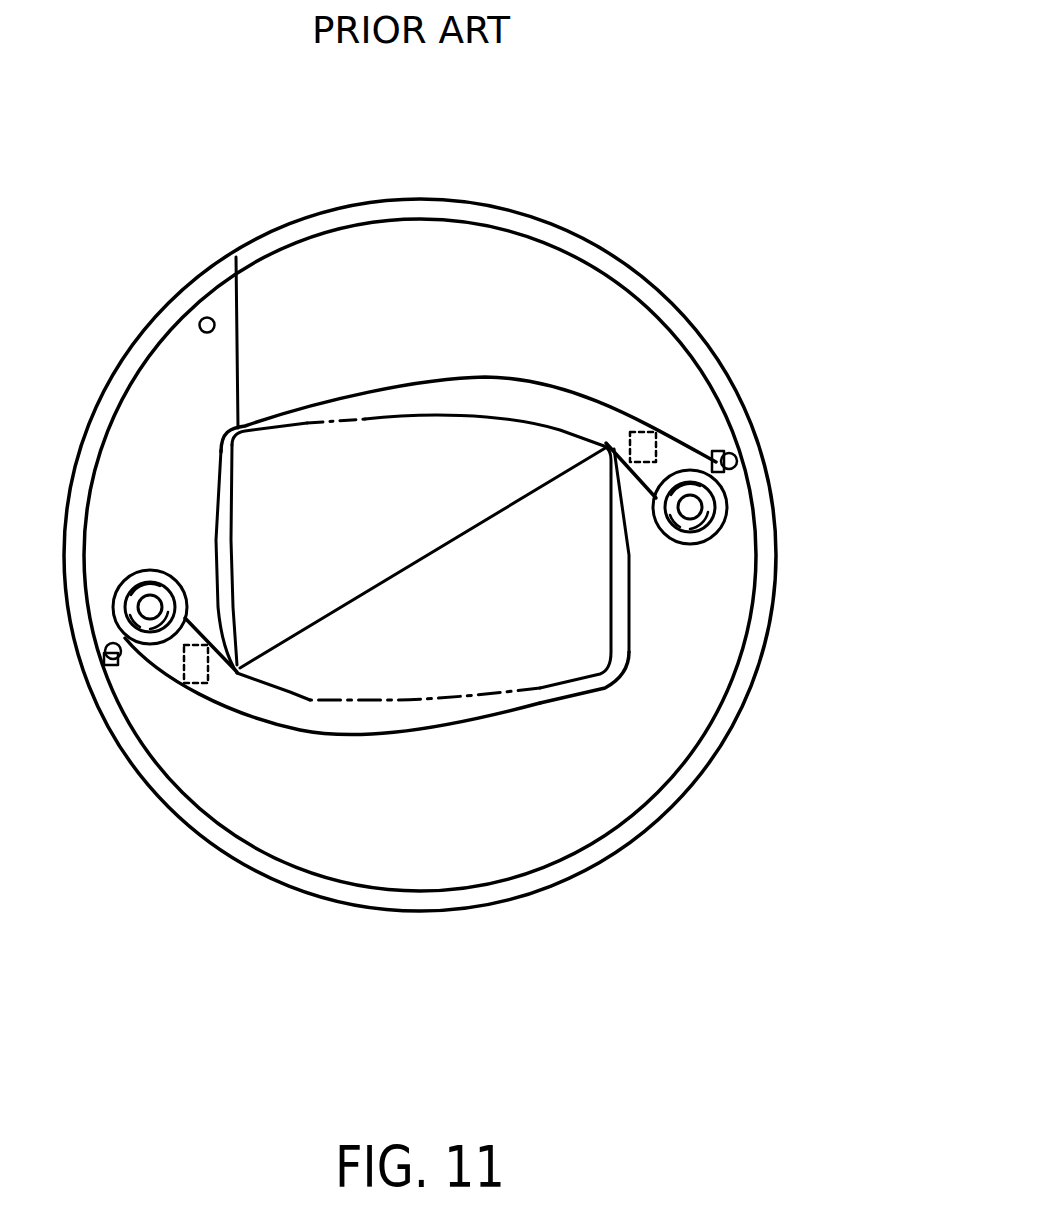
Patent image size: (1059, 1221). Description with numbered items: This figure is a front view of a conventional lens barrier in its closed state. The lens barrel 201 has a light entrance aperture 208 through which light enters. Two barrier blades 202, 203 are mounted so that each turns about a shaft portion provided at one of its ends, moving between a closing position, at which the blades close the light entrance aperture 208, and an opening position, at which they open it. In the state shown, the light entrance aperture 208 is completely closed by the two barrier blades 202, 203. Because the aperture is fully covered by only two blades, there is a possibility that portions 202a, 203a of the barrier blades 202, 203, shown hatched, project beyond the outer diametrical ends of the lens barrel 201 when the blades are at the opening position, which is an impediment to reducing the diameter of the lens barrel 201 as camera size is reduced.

The lens barrel 201 is at (500, 213).
The barrier blade 202 is at (540, 400).
The portion of barrier blade 202a is at (236, 257).
The barrier blade 203 is at (557, 592).
The portion of barrier blade 203a is at (623, 657).
The light entrance aperture 208 is at (408, 415).